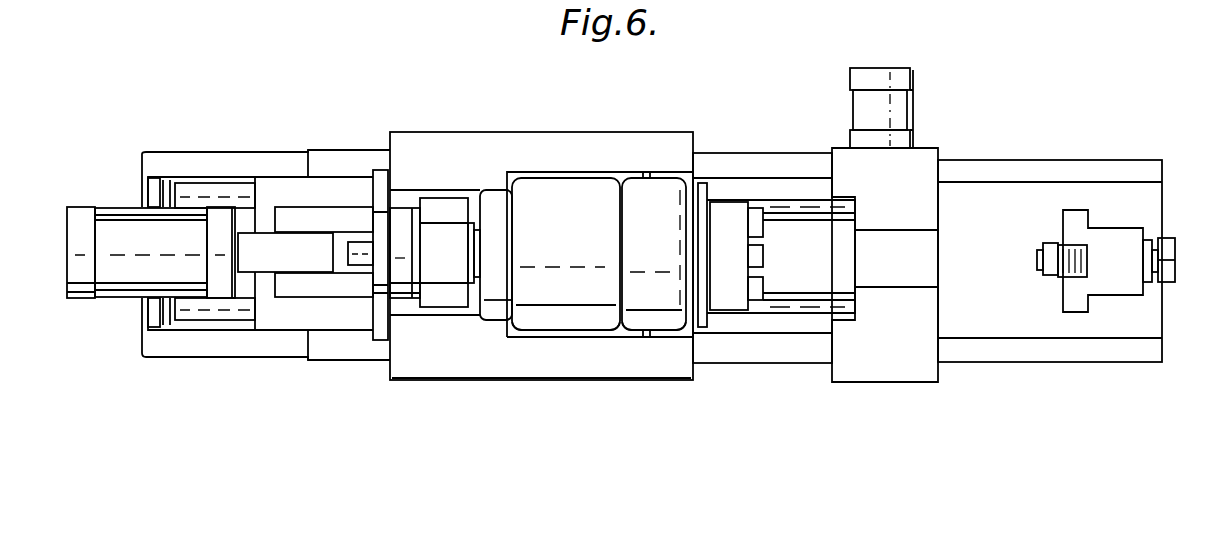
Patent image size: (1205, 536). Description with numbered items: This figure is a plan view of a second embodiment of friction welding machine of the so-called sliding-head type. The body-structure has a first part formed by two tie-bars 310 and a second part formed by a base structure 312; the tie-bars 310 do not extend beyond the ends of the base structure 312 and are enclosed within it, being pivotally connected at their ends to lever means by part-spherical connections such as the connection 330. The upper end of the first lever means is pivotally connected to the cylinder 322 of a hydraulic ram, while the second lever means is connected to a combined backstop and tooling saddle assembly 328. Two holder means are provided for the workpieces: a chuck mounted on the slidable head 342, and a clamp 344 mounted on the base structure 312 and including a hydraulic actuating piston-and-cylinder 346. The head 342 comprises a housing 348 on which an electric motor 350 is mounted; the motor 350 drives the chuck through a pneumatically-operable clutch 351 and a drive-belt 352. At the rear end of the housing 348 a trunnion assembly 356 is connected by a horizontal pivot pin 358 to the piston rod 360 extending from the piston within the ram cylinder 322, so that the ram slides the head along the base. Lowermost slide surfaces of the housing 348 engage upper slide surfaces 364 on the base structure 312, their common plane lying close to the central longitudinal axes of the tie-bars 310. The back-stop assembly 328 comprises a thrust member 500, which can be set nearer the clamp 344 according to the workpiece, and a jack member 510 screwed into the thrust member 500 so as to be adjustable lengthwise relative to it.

The tie-bars 310 is at (197, 192).
The base structure 312 is at (247, 153).
The cylinder 322 is at (222, 290).
The combined backstop and tooling saddle assembly 328 is at (1162, 330).
The part-spherical connection 330 is at (150, 190).
The slidable head 342 is at (607, 98).
The clamp 344 is at (912, 368).
The hydraulic actuating piston-and-cylinder 346 is at (900, 102).
The housing 348 is at (670, 360).
The electric motor 350 is at (595, 192).
The pneumatically-operable clutch 351 is at (398, 202).
The drive-belt 352 is at (442, 202).
The trunnion assembly 356 is at (353, 287).
The horizontal pivot pin 358 is at (303, 207).
The piston rod 360 is at (725, 212).
The upper slide surfaces 364 is at (788, 160).
The thrust member 500 is at (1112, 242).
The jack member 510 is at (1043, 243).